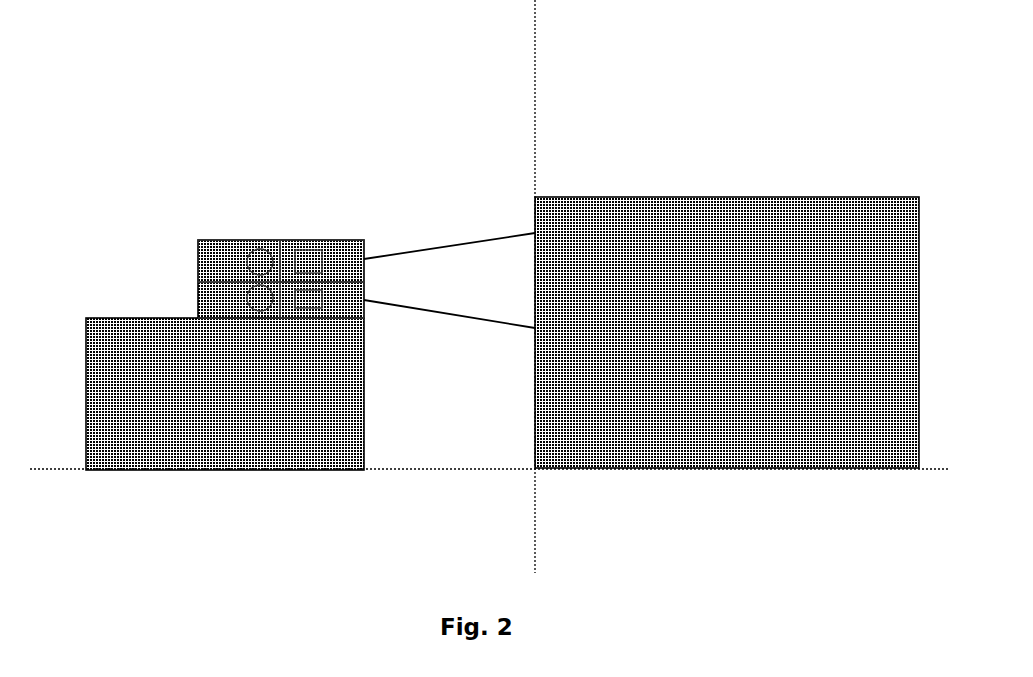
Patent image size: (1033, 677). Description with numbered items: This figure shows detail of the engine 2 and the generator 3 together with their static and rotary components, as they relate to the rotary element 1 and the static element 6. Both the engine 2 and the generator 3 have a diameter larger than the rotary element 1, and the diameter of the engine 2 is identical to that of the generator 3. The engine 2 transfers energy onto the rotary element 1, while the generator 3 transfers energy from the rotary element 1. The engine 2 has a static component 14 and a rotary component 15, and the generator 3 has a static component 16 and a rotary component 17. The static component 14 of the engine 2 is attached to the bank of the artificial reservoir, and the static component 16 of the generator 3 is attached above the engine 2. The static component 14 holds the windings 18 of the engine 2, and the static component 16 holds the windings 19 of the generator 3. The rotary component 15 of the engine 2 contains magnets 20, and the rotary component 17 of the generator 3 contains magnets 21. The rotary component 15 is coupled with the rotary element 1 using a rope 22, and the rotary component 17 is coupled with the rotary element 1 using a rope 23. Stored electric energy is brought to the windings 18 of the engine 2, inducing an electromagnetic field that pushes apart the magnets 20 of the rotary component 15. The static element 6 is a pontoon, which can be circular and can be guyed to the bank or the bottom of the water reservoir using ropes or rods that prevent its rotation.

The rotary element 1 is at (727, 259).
The engine 2 is at (222, 219).
The generator 3 is at (220, 227).
The static element 6 is at (205, 348).
The static component of the engine 14 is at (208, 156).
The rotary component of the engine 15 is at (373, 233).
The static component of the generator 16 is at (281, 435).
The rotary component of the generator 17 is at (378, 350).
The windings of the engine 18 is at (293, 150).
The windings of the generator 19 is at (295, 375).
The magnets of the engine 20 is at (337, 192).
The magnets of the generator 21 is at (373, 371).
The rope of the engine 22 is at (463, 167).
The rope of the generator 23 is at (466, 411).